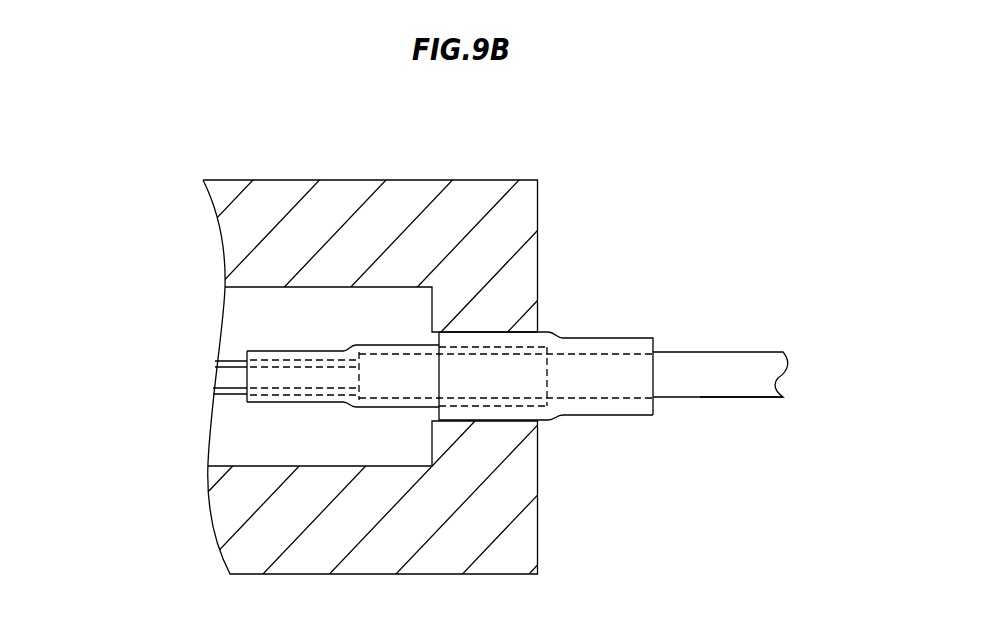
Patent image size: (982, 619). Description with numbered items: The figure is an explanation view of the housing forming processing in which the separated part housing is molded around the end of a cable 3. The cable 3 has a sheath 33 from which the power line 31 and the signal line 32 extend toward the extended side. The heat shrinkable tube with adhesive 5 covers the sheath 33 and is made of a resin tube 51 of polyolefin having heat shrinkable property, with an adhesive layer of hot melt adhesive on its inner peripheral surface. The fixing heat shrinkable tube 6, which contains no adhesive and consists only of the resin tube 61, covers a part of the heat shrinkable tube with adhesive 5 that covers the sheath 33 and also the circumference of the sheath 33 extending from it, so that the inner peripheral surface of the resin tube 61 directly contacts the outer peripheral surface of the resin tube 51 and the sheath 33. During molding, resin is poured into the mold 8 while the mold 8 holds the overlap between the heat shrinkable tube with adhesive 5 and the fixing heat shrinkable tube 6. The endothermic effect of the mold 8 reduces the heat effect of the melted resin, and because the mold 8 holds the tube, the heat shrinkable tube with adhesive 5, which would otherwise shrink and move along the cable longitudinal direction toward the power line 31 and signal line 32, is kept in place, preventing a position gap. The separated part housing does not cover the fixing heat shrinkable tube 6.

The cable 3 is at (743, 350).
The heat shrinkable tube with adhesive 5 is at (378, 345).
The fixing heat shrinkable tube 6 is at (582, 415).
The mold 8 is at (495, 179).
The power line 31 is at (222, 378).
The signal line 32 is at (217, 392).
The sheath 33 is at (743, 388).
The resin tube 51 is at (267, 350).
The resin tube 61 is at (610, 337).